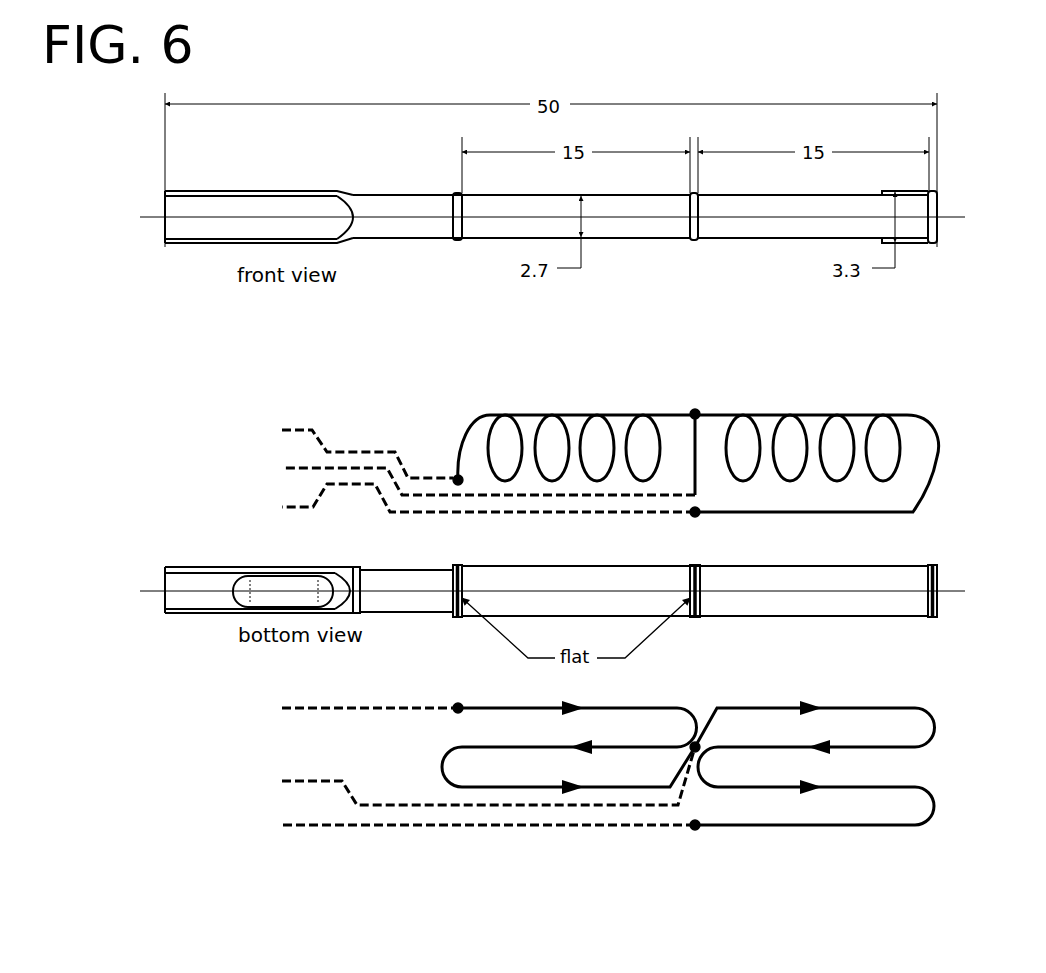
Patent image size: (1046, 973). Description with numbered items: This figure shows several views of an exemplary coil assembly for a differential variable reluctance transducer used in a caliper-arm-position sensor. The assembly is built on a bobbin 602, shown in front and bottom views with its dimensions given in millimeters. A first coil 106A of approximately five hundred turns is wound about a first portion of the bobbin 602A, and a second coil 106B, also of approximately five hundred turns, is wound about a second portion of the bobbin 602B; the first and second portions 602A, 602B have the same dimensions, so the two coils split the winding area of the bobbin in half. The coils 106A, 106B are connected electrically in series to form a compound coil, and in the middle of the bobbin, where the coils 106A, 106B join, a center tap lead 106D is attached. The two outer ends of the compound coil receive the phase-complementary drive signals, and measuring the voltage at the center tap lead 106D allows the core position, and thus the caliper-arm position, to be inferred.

The bobbin 602 is at (552, 232).
The first portion of the bobbin 602A is at (594, 252).
The second portion of the bobbin 602B is at (728, 254).
The first coil 106A is at (448, 428).
The second coil 106B is at (878, 410).
The center tap lead 106D is at (282, 468).